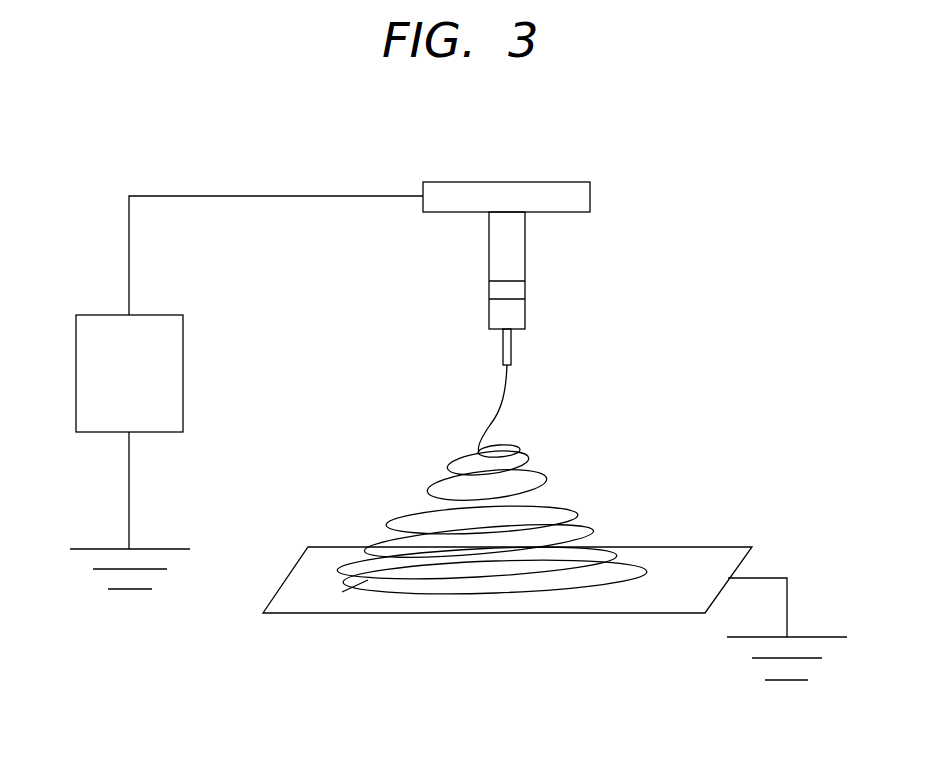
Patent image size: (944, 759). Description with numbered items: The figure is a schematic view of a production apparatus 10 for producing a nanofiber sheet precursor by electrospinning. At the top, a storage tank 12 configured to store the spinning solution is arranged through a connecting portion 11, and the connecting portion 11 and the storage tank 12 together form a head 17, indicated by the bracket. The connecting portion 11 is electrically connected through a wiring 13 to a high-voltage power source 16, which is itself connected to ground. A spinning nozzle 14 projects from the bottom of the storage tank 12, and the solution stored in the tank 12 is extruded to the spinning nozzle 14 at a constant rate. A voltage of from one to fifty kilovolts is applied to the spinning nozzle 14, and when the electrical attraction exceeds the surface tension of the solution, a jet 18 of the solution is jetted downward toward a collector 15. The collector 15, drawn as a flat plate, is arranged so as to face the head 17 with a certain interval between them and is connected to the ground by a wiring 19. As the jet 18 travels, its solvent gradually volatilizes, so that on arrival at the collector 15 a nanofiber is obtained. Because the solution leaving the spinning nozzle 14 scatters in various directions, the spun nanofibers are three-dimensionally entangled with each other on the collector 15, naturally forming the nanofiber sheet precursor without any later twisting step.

The production apparatus 10 is at (621, 126).
The connecting portion 11 is at (590, 197).
The storage tank 12 is at (525, 267).
The wiring 13 is at (292, 198).
The spinning nozzle 14 is at (502, 350).
The collector 15 is at (674, 546).
The high-voltage power source 16 is at (129, 433).
The head 17 is at (668, 178).
The jet 18 is at (510, 372).
The wiring 19 is at (770, 577).